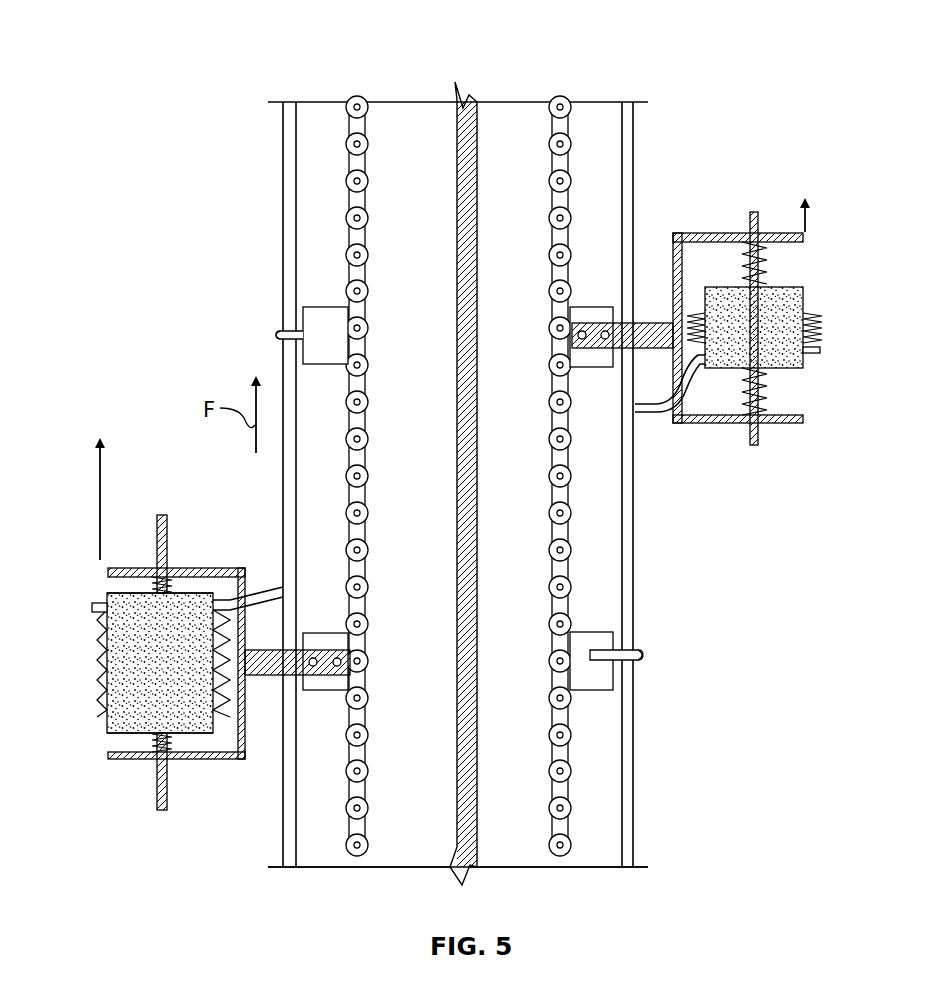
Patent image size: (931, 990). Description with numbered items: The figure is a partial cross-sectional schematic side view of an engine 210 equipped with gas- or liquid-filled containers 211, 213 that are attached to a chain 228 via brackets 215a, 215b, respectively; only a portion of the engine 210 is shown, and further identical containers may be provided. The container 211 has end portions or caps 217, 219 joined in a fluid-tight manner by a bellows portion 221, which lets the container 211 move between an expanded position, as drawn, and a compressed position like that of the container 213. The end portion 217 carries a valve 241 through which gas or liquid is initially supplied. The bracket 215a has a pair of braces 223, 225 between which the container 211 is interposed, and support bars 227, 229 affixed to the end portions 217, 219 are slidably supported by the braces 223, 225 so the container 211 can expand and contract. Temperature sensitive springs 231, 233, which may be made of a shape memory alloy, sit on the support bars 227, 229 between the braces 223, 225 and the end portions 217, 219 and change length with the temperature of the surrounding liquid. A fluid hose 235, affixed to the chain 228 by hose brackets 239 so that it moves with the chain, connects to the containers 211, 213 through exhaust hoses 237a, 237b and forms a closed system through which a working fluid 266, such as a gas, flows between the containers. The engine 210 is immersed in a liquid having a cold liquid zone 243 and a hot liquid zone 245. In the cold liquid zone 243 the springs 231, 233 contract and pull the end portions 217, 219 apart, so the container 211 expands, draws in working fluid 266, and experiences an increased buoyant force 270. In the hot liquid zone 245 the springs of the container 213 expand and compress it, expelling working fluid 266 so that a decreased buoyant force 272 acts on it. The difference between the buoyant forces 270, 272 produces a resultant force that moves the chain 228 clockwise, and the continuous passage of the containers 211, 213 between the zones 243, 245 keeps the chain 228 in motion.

The engine 210 is at (188, 52).
The container 211 is at (56, 576).
The container 213 is at (815, 268).
The bracket 215a is at (258, 680).
The bracket 215b is at (657, 320).
The end portion 217 is at (118, 592).
The end portion 219 is at (107, 722).
The bellows portion 221 is at (97, 668).
The brace 223 is at (195, 568).
The brace 225 is at (120, 758).
The support bar 227 is at (160, 515).
The chain 228 is at (367, 163).
The support bar 229 is at (157, 795).
The temperature sensitive spring 231 is at (152, 582).
The temperature sensitive spring 233 is at (170, 742).
The fluid hose 235 is at (283, 265).
The exhaust hose 237a is at (270, 590).
The exhaust hose 237b is at (653, 415).
The hose bracket 239 is at (310, 306).
The valve 241 is at (92, 608).
The cold liquid zone 243 is at (150, 335).
The hot liquid zone 245 is at (777, 633).
The working fluid 266 is at (455, 510).
The buoyant force 270 is at (98, 487).
The buoyant force 272 is at (800, 212).